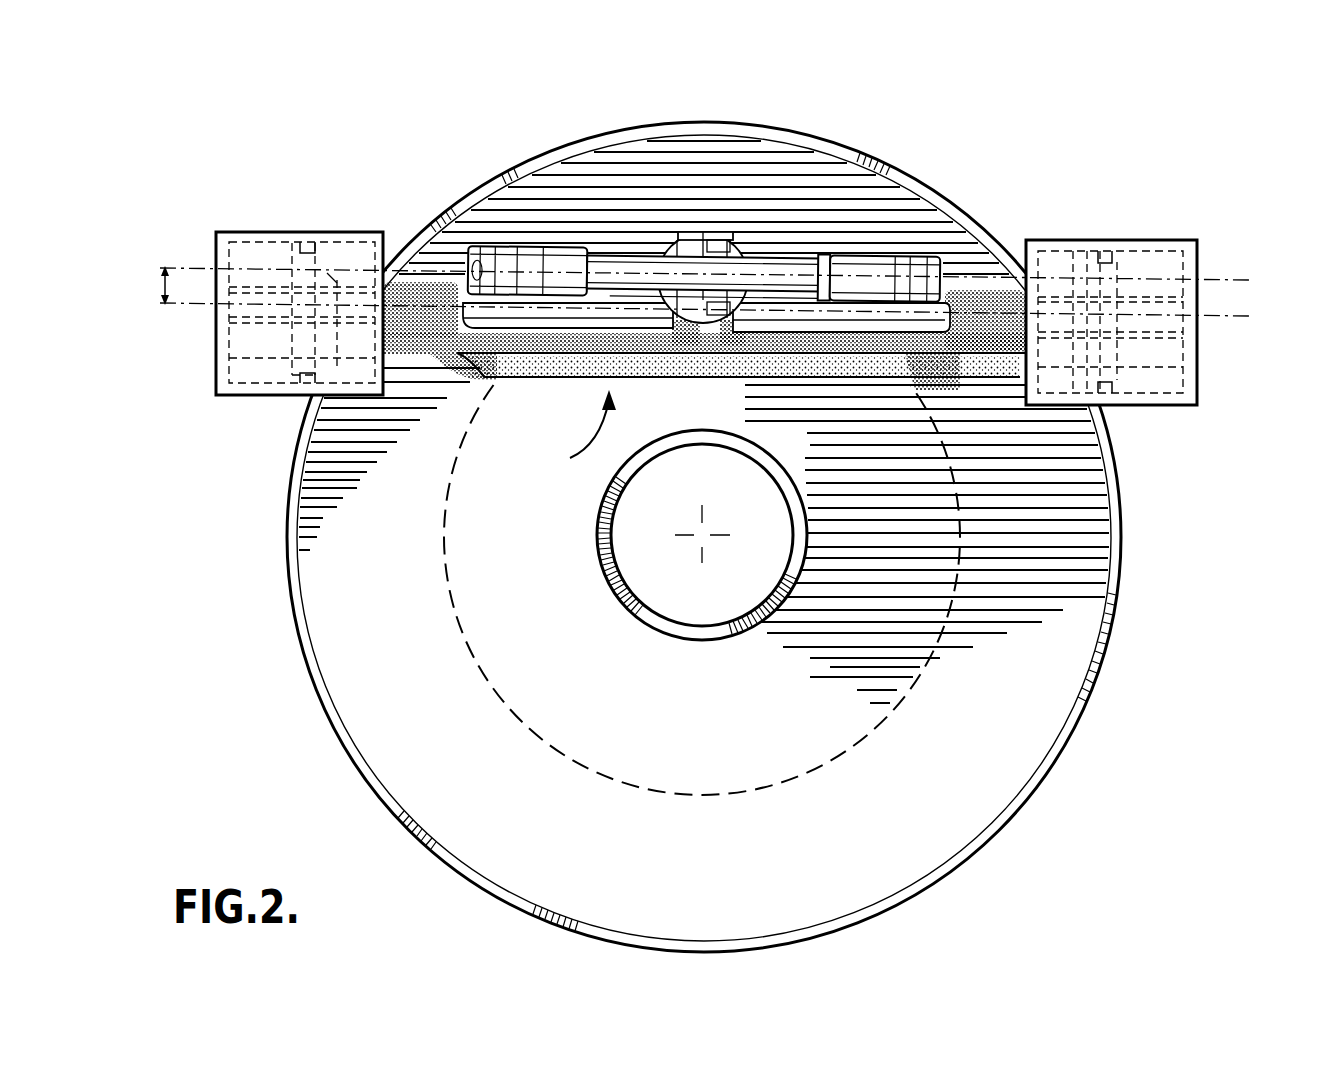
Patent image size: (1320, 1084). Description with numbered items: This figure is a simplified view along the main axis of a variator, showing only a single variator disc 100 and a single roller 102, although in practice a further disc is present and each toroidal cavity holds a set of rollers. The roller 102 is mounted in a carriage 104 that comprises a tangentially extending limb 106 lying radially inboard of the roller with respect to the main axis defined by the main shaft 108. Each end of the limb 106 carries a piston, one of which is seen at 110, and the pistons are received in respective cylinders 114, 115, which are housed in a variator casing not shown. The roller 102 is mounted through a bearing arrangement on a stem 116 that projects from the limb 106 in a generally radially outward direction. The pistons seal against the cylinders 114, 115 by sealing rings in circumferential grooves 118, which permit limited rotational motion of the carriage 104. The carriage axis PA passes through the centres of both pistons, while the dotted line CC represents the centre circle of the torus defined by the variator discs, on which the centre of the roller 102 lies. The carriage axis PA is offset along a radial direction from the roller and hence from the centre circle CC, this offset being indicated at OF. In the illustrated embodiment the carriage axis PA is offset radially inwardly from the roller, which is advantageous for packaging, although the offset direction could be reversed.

The variator disc 100 is at (852, 148).
The roller 102 is at (838, 252).
The carriage 104 is at (562, 432).
The limb 106 is at (812, 378).
The main shaft 108 is at (723, 502).
The piston 110 is at (325, 265).
The cylinder 114 is at (260, 394).
The cylinder 115 is at (1130, 406).
The stem 116 is at (703, 232).
The circumferential groove 118 is at (308, 246).
The centre circle CC is at (953, 599).
The carriage axis PA is at (727, 317).
The offset OF is at (136, 285).